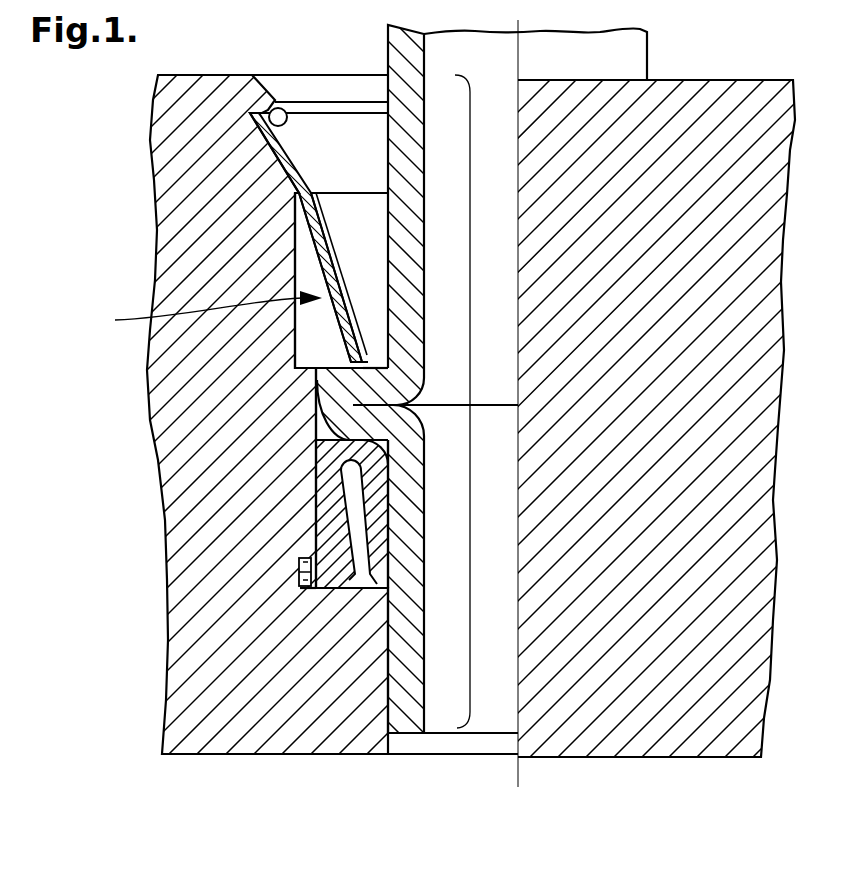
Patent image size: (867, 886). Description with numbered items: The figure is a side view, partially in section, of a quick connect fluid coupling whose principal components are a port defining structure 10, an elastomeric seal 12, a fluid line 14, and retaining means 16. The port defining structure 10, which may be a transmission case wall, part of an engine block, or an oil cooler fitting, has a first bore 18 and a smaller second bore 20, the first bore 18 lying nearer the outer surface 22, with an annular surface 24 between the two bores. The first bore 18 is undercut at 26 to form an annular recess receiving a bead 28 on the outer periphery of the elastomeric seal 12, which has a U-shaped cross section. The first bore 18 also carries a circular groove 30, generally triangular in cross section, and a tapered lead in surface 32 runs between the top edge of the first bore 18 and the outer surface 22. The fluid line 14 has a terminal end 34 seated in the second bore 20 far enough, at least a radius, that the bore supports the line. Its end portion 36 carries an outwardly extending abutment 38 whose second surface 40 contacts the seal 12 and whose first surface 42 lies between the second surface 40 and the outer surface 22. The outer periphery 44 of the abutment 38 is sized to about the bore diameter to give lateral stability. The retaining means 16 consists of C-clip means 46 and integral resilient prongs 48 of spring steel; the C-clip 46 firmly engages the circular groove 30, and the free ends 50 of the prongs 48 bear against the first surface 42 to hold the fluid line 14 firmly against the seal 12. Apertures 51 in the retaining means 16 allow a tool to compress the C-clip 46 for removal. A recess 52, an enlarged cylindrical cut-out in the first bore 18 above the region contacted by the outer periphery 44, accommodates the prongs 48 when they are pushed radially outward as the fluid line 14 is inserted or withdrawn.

The port defining structure 10 is at (170, 270).
The elastomeric seal 12 is at (322, 496).
The fluid line 14 is at (647, 50).
The retaining means 16 is at (206, 313).
The first bore 18 is at (322, 447).
The second bore 20 is at (393, 755).
The outer surface 22 is at (745, 78).
The annular surface 24 is at (378, 585).
The undercut 26 is at (299, 570).
The bead 28 is at (300, 583).
The circular groove 30 is at (287, 108).
The tapered lead in surface 32 is at (273, 100).
The terminal end 34 is at (417, 745).
The end portion 36 is at (470, 160).
The outwardly extending abutment 38 is at (330, 386).
The second surface 40 is at (390, 444).
The first surface 42 is at (372, 366).
The outer periphery 44 is at (318, 410).
The C-clip means 46 is at (282, 153).
The resilient prongs 48 is at (331, 258).
The free ends 50 is at (362, 363).
The apertures 51 is at (323, 236).
The recess 52 is at (295, 343).